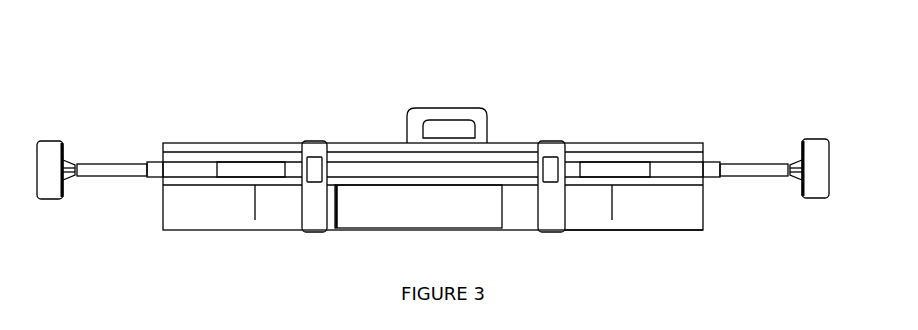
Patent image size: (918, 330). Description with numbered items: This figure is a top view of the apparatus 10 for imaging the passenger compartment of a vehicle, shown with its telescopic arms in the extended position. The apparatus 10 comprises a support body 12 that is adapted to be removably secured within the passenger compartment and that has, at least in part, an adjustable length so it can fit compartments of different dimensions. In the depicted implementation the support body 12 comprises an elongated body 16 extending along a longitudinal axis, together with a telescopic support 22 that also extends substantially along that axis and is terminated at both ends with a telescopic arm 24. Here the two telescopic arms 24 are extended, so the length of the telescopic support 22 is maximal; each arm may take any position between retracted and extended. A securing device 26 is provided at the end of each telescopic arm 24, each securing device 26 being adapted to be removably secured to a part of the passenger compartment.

The apparatus 10 is at (188, 65).
The support body 12 is at (605, 123).
The elongated body 16 is at (677, 213).
The telescopic support 22 is at (470, 170).
The telescopic arm 24 is at (192, 170).
The securing device 26 is at (53, 160).